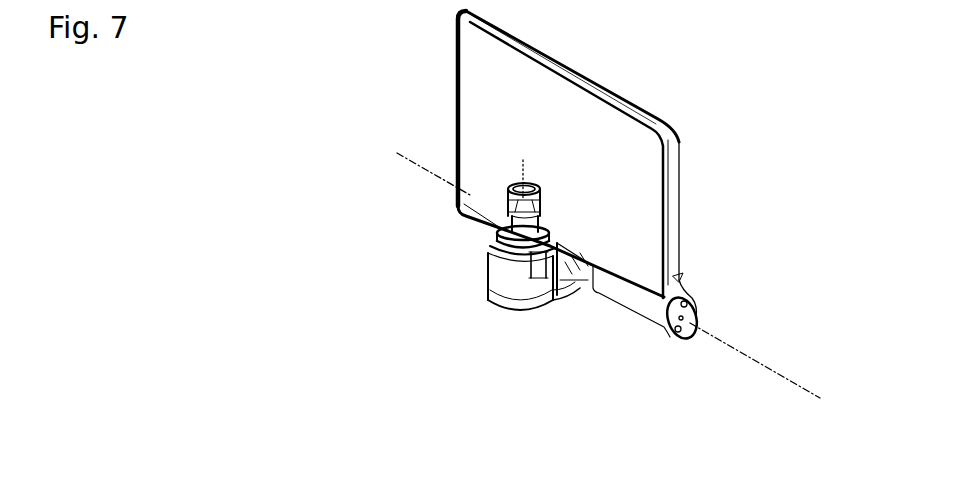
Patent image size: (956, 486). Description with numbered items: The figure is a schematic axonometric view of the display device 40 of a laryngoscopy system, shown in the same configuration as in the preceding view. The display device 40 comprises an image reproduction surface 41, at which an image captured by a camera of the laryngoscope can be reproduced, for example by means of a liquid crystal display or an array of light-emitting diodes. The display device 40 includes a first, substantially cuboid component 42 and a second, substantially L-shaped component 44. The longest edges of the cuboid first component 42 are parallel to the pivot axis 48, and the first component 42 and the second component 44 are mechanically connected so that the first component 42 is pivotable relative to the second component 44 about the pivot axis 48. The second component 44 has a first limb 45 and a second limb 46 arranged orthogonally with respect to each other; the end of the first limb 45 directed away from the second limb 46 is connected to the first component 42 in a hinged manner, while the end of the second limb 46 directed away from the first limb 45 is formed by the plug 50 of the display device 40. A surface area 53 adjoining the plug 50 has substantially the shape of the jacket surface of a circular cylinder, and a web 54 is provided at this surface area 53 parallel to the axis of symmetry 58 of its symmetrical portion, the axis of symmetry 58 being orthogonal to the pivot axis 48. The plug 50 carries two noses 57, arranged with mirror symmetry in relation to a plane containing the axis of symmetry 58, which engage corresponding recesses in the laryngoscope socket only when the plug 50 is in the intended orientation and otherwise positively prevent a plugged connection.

The display device 40 is at (338, 66).
The image reproduction surface 41 is at (475, 55).
The first component 42 is at (563, 55).
The second component 44 is at (510, 303).
The first limb 45 is at (570, 292).
The second limb 46 is at (507, 262).
The pivot axis 48 is at (753, 357).
The plug 50 is at (510, 229).
The surface area 53 is at (515, 270).
The web 54 is at (552, 258).
The nose 57 is at (515, 210).
The axis of symmetry 58 is at (522, 175).